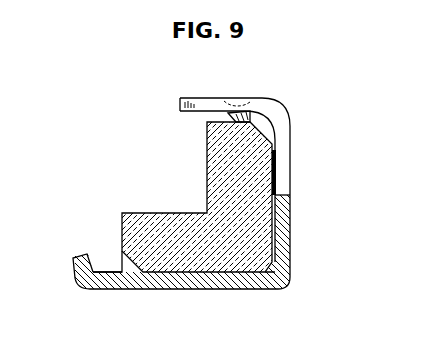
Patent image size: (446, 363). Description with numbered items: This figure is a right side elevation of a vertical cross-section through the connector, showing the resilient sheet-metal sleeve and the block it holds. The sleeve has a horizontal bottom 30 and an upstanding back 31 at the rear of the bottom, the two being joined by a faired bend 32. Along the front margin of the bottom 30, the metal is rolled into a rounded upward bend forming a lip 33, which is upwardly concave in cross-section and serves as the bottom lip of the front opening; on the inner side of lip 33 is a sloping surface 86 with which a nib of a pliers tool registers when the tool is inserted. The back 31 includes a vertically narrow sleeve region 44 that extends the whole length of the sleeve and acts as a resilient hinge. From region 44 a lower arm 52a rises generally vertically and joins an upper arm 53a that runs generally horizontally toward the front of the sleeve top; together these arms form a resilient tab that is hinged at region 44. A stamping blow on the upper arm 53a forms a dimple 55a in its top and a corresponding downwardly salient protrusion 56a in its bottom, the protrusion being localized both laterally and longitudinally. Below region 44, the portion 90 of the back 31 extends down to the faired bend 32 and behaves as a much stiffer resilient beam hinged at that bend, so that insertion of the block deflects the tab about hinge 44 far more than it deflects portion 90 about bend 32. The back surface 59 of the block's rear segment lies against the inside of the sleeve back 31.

The upper arm 53a is at (204, 98).
The dimple 55a is at (240, 101).
The lower arm 52a is at (288, 108).
The back 31 is at (292, 130).
The back surface 59 is at (279, 161).
The sleeve region 44 is at (289, 196).
The portion of sleeve back 90 is at (292, 246).
The faired bend 32 is at (281, 287).
The bottom 30 is at (172, 289).
The lip 33 is at (83, 254).
The surface 86 is at (94, 264).
The protrusion 56a is at (232, 114).